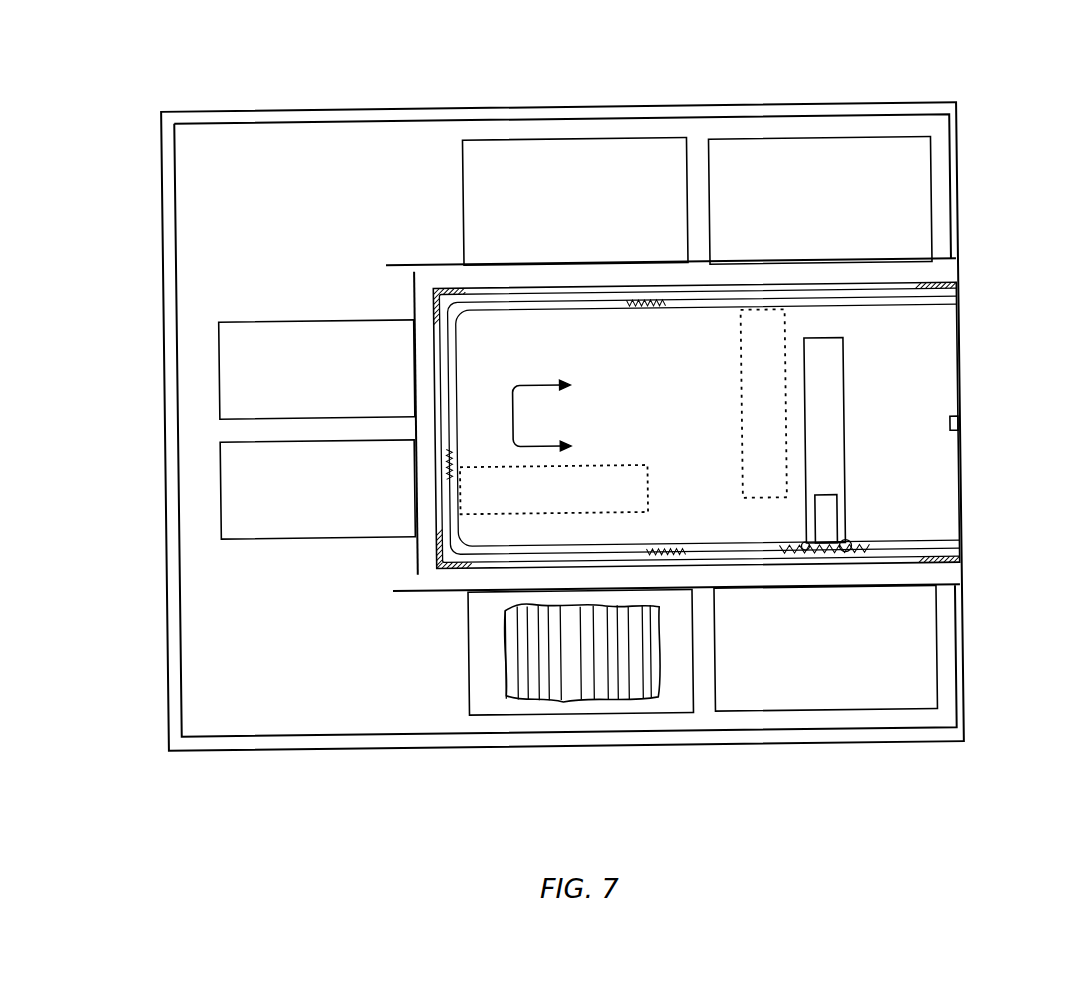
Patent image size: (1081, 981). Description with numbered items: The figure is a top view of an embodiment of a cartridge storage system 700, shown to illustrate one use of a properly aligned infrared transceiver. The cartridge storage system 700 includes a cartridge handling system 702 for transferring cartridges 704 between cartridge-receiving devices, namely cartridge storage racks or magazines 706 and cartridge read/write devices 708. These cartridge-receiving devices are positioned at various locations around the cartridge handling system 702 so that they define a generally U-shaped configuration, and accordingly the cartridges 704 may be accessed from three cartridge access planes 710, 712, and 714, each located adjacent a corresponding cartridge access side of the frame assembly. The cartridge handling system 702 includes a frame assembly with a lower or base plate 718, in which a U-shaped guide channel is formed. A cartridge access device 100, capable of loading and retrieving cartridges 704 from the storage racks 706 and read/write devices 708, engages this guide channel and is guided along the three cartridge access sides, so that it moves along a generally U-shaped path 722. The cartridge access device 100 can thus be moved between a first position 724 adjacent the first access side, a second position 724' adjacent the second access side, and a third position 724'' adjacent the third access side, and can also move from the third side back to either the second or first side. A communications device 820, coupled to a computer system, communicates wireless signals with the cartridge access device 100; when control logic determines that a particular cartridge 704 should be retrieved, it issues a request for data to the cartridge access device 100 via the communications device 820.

The cartridge storage system 700 is at (612, 421).
The cartridge handling system 702 is at (984, 335).
The cartridges 704 is at (567, 695).
The cartridge storage racks or magazines 706 is at (562, 216).
The cartridge read/write devices 708 is at (297, 375).
The cartridge access plane 710 is at (406, 595).
The cartridge access plane 712 is at (411, 298).
The cartridge access plane 714 is at (429, 263).
The lower or base plate 718 is at (557, 359).
The U-shaped path 722 is at (520, 423).
The first position 724 is at (859, 440).
The second position 724' is at (568, 480).
The third position 724'' is at (727, 403).
The cartridge access device 100 is at (845, 486).
The communications device 820 is at (960, 430).